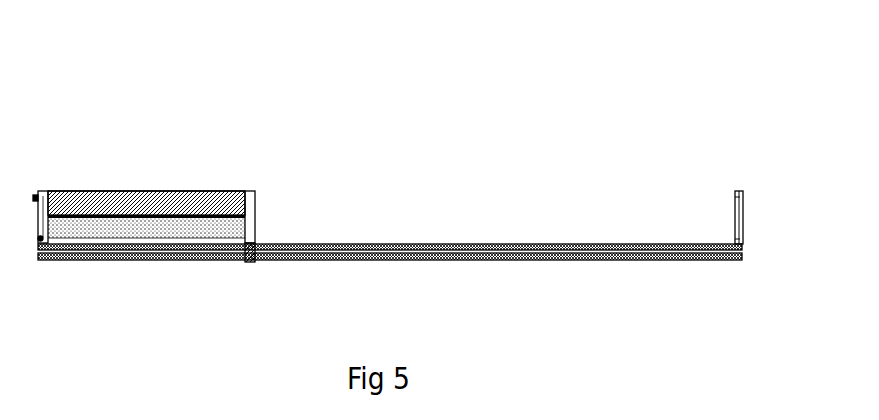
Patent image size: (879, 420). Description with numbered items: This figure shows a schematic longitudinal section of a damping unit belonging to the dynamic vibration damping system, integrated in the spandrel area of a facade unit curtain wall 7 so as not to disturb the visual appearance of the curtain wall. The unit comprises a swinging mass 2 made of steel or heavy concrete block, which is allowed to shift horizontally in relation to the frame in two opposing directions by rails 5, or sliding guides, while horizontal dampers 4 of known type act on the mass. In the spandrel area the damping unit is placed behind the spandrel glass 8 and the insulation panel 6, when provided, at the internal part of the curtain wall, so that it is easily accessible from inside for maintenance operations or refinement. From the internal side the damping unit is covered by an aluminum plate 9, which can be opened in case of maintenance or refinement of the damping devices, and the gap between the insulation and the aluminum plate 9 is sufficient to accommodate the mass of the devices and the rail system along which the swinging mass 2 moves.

The swinging mass 2 is at (100, 196).
The horizontal dampers 4 is at (211, 202).
The rails 5 is at (45, 196).
The insulation panel 6 is at (188, 226).
The curtain wall 7 is at (257, 223).
The spandrel glass 8 is at (132, 261).
The aluminum plate 9 is at (167, 190).